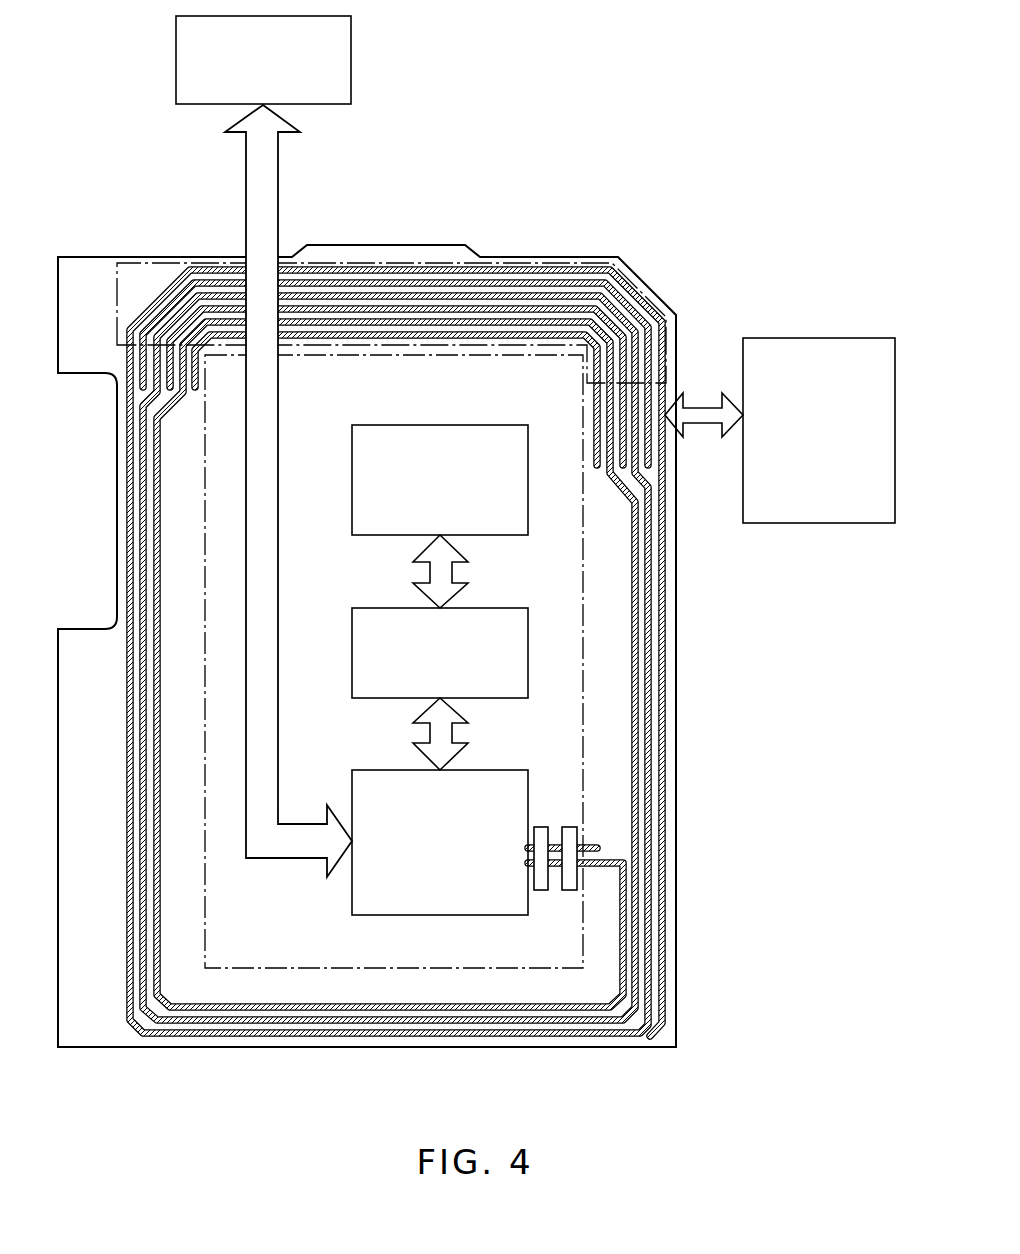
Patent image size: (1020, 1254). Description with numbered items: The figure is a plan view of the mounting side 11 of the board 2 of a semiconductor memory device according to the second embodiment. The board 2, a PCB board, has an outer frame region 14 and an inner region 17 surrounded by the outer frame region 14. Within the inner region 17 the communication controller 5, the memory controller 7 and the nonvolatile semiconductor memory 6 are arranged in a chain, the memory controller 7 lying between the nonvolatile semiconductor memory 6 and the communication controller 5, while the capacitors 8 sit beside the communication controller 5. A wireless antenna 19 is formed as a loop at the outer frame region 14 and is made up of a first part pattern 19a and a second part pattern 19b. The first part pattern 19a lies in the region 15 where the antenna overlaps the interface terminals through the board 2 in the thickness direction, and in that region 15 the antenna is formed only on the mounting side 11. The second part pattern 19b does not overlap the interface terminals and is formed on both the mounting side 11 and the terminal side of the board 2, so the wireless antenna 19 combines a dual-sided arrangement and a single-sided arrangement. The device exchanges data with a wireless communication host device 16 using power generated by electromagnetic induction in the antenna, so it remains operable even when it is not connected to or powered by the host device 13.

The board 2 is at (87, 652).
The communication controller 5 is at (505, 770).
The nonvolatile semiconductor memory 6 is at (474, 425).
The memory controller 7 is at (497, 608).
The capacitors 8 is at (537, 827).
The mounting side 11 is at (677, 1028).
The host device 13 is at (352, 58).
The outer frame region 14 is at (91, 1048).
The region 15 is at (130, 262).
The wireless communication host device 16 is at (820, 338).
The inner region 17 is at (520, 383).
The wireless antenna 19 is at (667, 907).
The first part pattern 19a is at (567, 265).
The second part pattern 19b is at (668, 733).